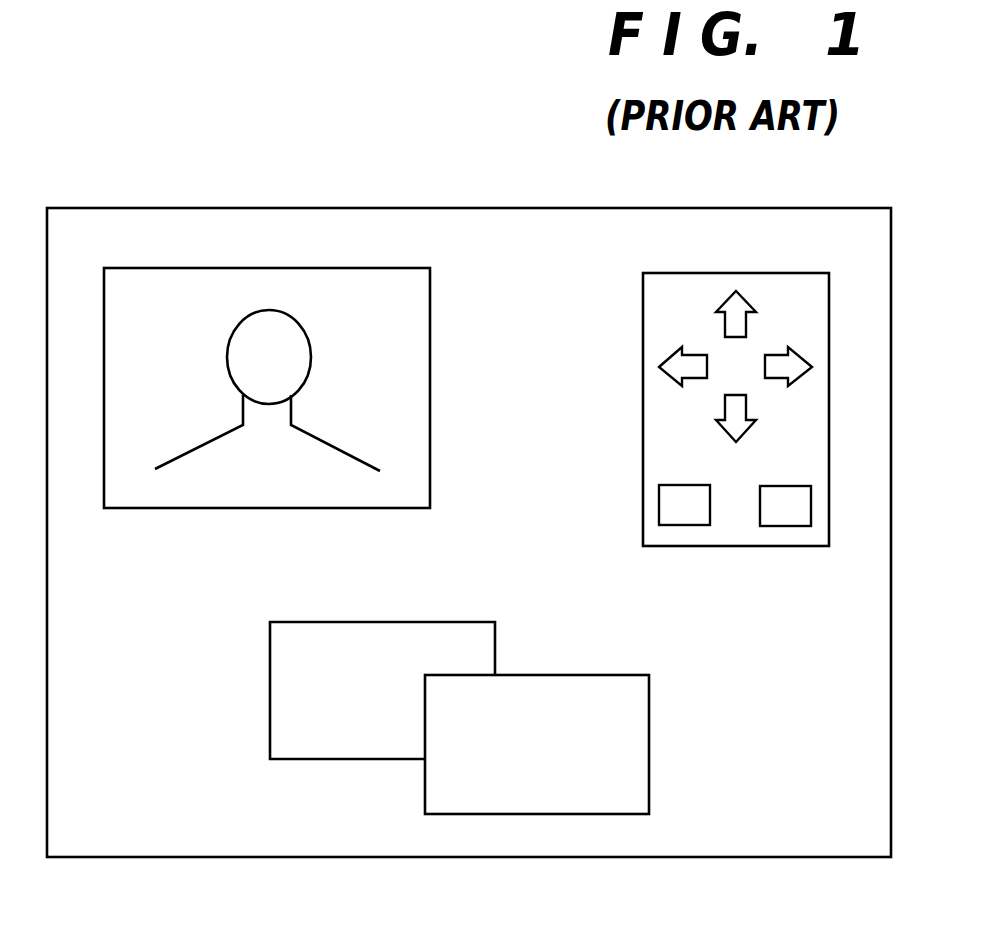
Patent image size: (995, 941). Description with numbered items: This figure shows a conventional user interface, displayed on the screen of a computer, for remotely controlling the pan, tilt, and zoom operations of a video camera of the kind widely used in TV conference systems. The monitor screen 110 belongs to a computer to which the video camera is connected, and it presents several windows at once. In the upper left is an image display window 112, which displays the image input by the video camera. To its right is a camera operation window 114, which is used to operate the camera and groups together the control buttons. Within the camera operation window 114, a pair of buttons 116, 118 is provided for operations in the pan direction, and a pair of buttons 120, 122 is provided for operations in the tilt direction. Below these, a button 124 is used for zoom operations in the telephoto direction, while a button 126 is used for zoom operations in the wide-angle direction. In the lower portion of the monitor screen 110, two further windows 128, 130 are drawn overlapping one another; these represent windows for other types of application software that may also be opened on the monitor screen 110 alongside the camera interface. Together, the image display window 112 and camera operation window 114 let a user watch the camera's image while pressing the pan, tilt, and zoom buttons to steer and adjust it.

The monitor screen 110 is at (420, 208).
The image display window 112 is at (431, 340).
The camera operation window 114 is at (737, 273).
The button 116 is at (659, 367).
The button 118 is at (812, 367).
The button 120 is at (728, 302).
The button 122 is at (720, 428).
The button 124 is at (685, 525).
The button 126 is at (788, 526).
The window 128 is at (270, 693).
The window 130 is at (649, 767).